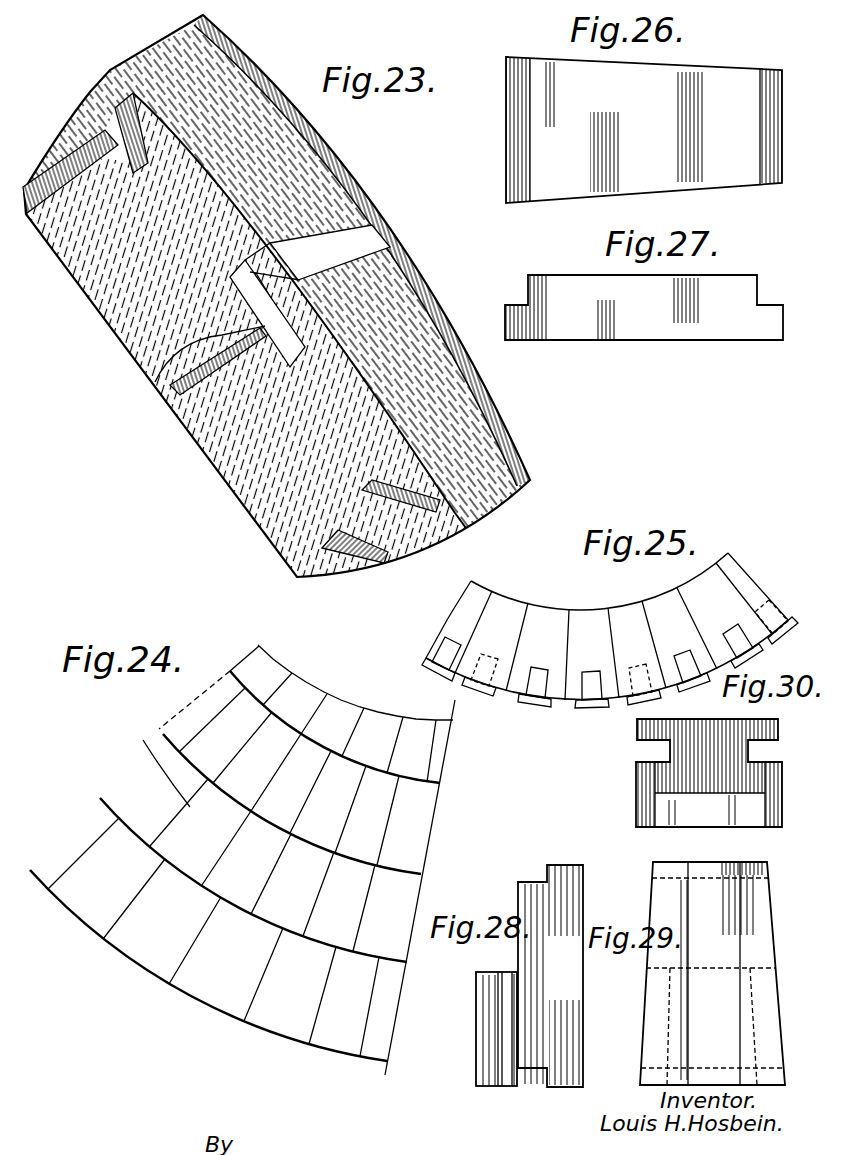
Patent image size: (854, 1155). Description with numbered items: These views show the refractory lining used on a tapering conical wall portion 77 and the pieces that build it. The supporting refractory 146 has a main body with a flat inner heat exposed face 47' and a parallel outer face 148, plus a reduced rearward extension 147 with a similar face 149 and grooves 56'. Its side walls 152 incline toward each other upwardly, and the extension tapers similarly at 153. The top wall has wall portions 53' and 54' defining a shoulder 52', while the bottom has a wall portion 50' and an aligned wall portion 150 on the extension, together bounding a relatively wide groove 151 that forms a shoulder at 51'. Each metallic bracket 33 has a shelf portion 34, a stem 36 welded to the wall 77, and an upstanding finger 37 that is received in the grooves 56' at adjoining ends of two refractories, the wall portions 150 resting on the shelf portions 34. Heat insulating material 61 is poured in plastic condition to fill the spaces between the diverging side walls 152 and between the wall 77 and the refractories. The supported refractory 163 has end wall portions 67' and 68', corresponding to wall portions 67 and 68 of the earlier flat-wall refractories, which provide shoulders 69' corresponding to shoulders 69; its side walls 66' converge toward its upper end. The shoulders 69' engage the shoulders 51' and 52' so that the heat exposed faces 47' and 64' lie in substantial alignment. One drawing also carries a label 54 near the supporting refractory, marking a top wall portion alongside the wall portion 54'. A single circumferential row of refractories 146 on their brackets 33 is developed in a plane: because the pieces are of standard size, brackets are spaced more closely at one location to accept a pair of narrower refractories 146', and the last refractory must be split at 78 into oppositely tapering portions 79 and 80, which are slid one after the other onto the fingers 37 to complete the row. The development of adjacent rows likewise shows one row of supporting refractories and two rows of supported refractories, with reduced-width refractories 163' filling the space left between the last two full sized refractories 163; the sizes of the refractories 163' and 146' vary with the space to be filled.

In FIG. 23, the tapering refractory 146 is at (277, 296).
In FIG. 25, the tapering refractory 146 is at (607, 617).
In FIG. 28, the tapering refractory 146 is at (610, 880).
In FIG. 24, the tapering refractory 146 is at (261, 861).
In FIG. 25, the narrower refractory 146' is at (618, 593).
In FIG. 24, the narrower refractory 146' is at (312, 748).
In FIG. 23, the reduced rearward extension 147 is at (230, 202).
In FIG. 28, the reduced rearward extension 147 is at (485, 1027).
In FIG. 28, the outer face 148 is at (518, 908).
In FIG. 30, the rearward extension face 149 is at (704, 720).
In FIG. 28, the rearward extension face 149 is at (477, 1048).
In FIG. 28, the wall portion 150 is at (491, 1086).
In FIG. 28, the groove 151 is at (528, 1070).
In FIG. 23, the side walls 152 is at (187, 382).
In FIG. 30, the side walls 152 is at (645, 787).
In FIG. 29, the side walls 152 is at (652, 908).
In FIG. 30, the tapering wall portions 153 is at (637, 724).
In FIG. 26, the supported refractory 163 is at (720, 201).
In FIG. 27, the supported refractory 163 is at (676, 352).
In FIG. 24, the supported refractory 163 is at (242, 864).
In FIG. 24, the reduced-width supported refractory 163' is at (179, 791).
In FIG. 23, the conical wall portion 77 is at (362, 184).
In FIG. 24, the conical wall portion 77 is at (313, 679).
In FIG. 25, the split 78 is at (556, 620).
In FIG. 24, the split 78 is at (165, 770).
In FIG. 25, the tapering portion 79 is at (560, 622).
In FIG. 24, the tapering portion 79 is at (214, 801).
In FIG. 25, the tapering portion 80 is at (537, 612).
In FIG. 24, the tapering portion 80 is at (170, 817).
In FIG. 25, the bracket 33 is at (557, 695).
In FIG. 23, the shelf portion 34 is at (320, 366).
In FIG. 25, the shelf portion 34 is at (770, 640).
In FIG. 23, the stem 36 is at (393, 236).
In FIG. 23, the upstanding finger 37 is at (250, 272).
In FIG. 25, the upstanding finger 37 is at (510, 655).
In FIG. 30, the inner heat exposed face 47' is at (643, 840).
In FIG. 28, the inner heat exposed face 47' is at (573, 976).
In FIG. 28, the bottom wall portion 50' is at (571, 1098).
In FIG. 29, the bottom wall portion 50' is at (632, 1085).
In FIG. 28, the shoulder 51' is at (534, 1113).
In FIG. 28, the shoulder 52' is at (552, 848).
In FIG. 30, the top wall portion 53' is at (781, 783).
In FIG. 28, the top wall portion 53' is at (511, 859).
In FIG. 30, the base 54 is at (686, 835).
In FIG. 28, the top wall portion 54' is at (581, 851).
In FIG. 29, the top wall portion 54' is at (734, 845).
In FIG. 23, the grooves 56' is at (231, 335).
In FIG. 30, the grooves 56' is at (707, 751).
In FIG. 28, the grooves 56' is at (464, 995).
In FIG. 29, the grooves 56' is at (710, 997).
In FIG. 23, the heat insulating material 61 is at (187, 348).
In FIG. 27, the heat exposed face 64' is at (644, 291).
In FIG. 26, the side walls 66' is at (644, 131).
In FIG. 27, the wall portion 67 is at (775, 269).
In FIG. 27, the end wall portion 67' is at (524, 296).
In FIG. 27, the wall portion 68 is at (771, 350).
In FIG. 27, the end wall portion 68' is at (497, 319).
In FIG. 26, the shoulder 69 is at (778, 142).
In FIG. 27, the shoulder 69 is at (777, 292).
In FIG. 26, the shoulder 69' is at (498, 130).
In FIG. 27, the shoulder 69' is at (494, 284).